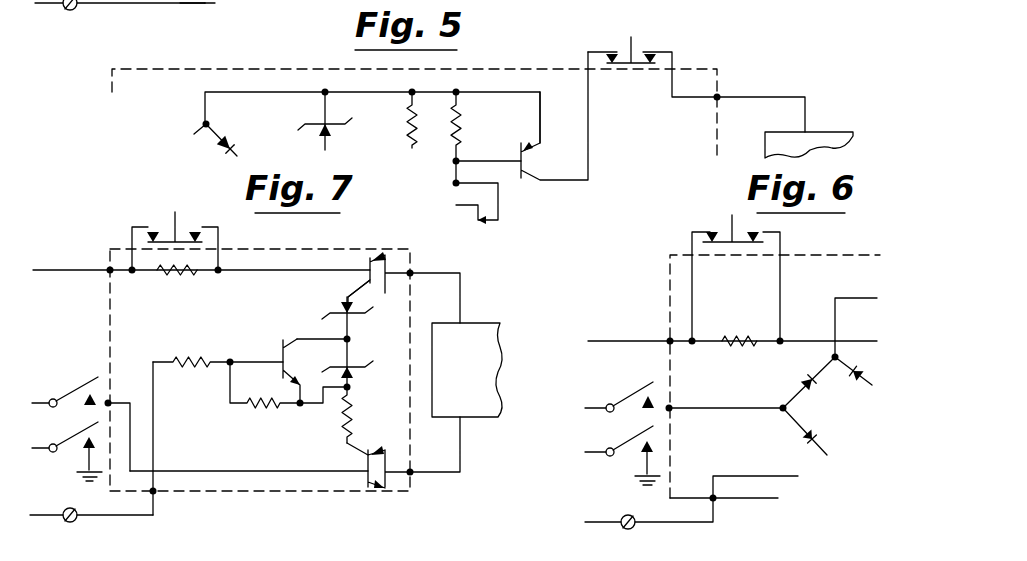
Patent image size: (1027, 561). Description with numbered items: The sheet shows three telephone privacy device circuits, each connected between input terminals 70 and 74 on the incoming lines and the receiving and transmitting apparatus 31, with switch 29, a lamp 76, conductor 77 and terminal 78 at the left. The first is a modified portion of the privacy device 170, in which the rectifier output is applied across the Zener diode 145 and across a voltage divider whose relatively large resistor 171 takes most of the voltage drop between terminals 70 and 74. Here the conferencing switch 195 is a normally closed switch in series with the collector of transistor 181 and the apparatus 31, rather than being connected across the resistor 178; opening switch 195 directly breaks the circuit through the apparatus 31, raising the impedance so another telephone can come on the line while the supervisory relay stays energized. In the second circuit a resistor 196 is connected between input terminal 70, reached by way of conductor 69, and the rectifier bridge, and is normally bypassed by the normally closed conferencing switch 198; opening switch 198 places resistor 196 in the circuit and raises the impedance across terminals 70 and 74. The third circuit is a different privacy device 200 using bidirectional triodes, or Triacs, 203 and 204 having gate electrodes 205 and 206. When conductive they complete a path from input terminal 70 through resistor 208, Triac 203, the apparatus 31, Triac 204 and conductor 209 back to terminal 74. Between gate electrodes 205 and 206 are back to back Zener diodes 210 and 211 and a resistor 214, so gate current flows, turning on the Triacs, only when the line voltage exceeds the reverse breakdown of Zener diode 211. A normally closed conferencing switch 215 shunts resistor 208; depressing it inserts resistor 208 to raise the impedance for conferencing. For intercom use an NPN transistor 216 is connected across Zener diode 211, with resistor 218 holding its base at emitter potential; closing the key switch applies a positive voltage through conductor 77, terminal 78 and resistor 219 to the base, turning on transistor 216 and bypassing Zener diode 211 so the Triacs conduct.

In FIG. 7, the switch 29 is at (74, 388).
In FIG. 6, the switch 29 is at (625, 388).
In FIG. 5, the receiving and transmitting apparatus 31 is at (830, 130).
In FIG. 7, the receiving and transmitting apparatus 31 is at (497, 322).
In FIG. 6, the conductor 69 is at (628, 340).
In FIG. 7, the input terminal 70 is at (108, 266).
In FIG. 6, the input terminal 70 is at (668, 338).
In FIG. 7, the input terminal 74 is at (112, 400).
In FIG. 6, the input terminal 74 is at (672, 412).
In FIG. 5, the lamp 76 is at (78, 8).
In FIG. 7, the lamp 76 is at (66, 508).
In FIG. 6, the lamp 76 is at (622, 515).
In FIG. 5, the conductor 77 is at (190, 4).
In FIG. 7, the conductor 77 is at (111, 514).
In FIG. 6, the conductor 77 is at (672, 520).
In FIG. 5, the terminal 78 is at (226, 4).
In FIG. 7, the terminal 78 is at (157, 494).
In FIG. 6, the terminal 78 is at (717, 500).
In FIG. 5, the Zener diode 145 is at (314, 122).
In FIG. 5, the privacy device 170 is at (200, 68).
In FIG. 6, the privacy device 170 is at (838, 255).
In FIG. 5, the resistor 171 is at (407, 140).
In FIG. 5, the resistor 178 is at (462, 122).
In FIG. 5, the transistor 181 is at (534, 163).
In FIG. 5, the conferencing switch 195 is at (656, 45).
In FIG. 6, the resistor 196 is at (735, 347).
In FIG. 6, the conferencing switch 198 is at (718, 223).
In FIG. 7, the privacy device 200 is at (265, 249).
In FIG. 7, the bidirectional triode 203 is at (400, 260).
In FIG. 7, the bidirectional triode 204 is at (395, 456).
In FIG. 7, the gate electrode 205 is at (350, 297).
In FIG. 7, the gate electrode 206 is at (350, 445).
In FIG. 7, the resistor 208 is at (180, 276).
In FIG. 7, the conductor 209 is at (248, 470).
In FIG. 7, the Zener diode 210 is at (338, 317).
In FIG. 7, the Zener diode 211 is at (353, 371).
In FIG. 7, the resistor 214 is at (352, 405).
In FIG. 7, the conferencing switch 215 is at (160, 212).
In FIG. 7, the NPN transistor 216 is at (274, 343).
In FIG. 7, the resistor 218 is at (265, 410).
In FIG. 7, the resistor 219 is at (195, 358).